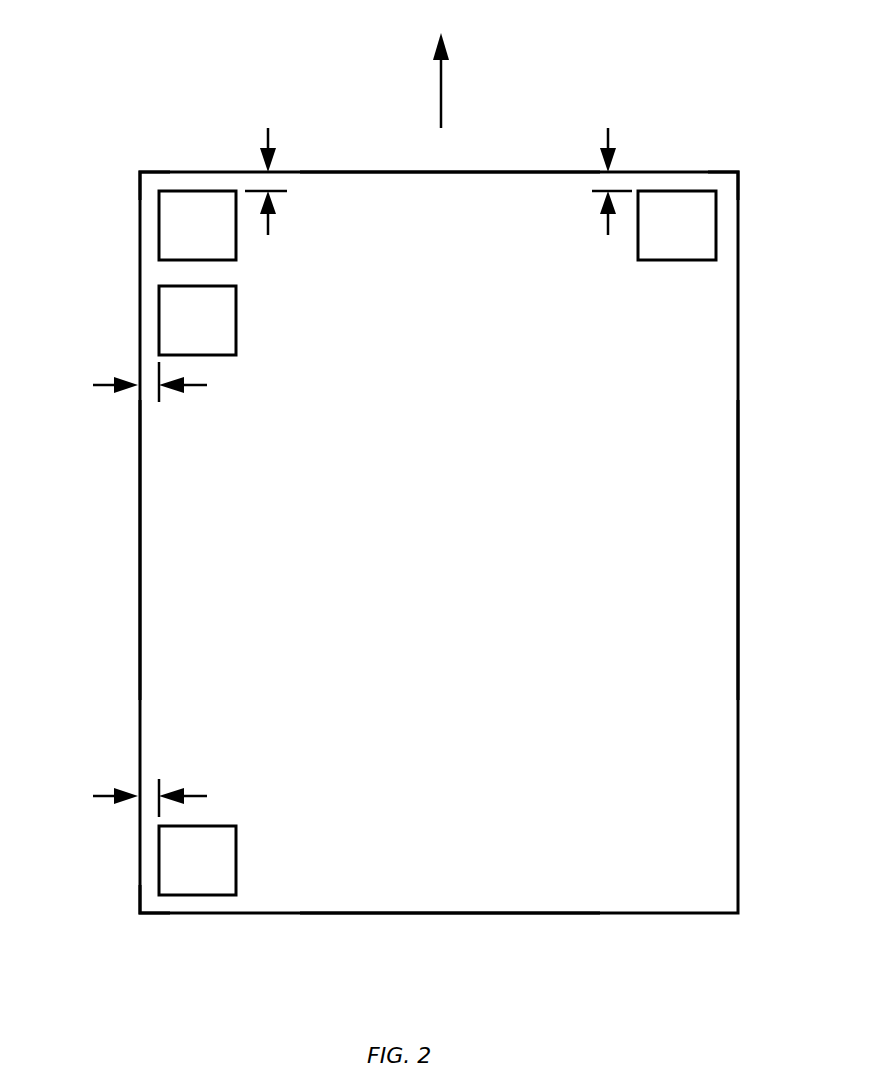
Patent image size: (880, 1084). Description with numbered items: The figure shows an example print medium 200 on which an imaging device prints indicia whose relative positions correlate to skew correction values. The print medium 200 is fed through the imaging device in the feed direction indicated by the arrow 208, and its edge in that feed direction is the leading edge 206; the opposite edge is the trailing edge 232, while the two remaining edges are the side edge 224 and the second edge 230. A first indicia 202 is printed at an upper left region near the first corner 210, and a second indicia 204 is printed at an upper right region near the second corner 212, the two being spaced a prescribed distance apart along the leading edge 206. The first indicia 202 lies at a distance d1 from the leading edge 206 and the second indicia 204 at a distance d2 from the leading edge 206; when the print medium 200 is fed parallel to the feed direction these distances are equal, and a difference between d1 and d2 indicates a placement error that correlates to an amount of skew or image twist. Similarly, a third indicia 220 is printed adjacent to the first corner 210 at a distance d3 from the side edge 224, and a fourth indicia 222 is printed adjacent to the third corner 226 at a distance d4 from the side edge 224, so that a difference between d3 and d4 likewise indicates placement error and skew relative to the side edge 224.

The print medium 200 is at (455, 414).
The first indicia 202 is at (159, 240).
The second indicia 204 is at (716, 228).
The leading edge 206 is at (492, 172).
The arrow 208 is at (441, 87).
The first corner 210 is at (128, 163).
The second corner 212 is at (750, 168).
The third indicia 220 is at (159, 310).
The fourth indicia 222 is at (159, 855).
The side edge 224 is at (140, 550).
The third corner 226 is at (128, 922).
The second edge 230 is at (738, 535).
The trailing edge 232 is at (373, 913).
The distance d1 is at (268, 132).
The distance d2 is at (608, 140).
The distance d3 is at (110, 380).
The distance d4 is at (110, 792).